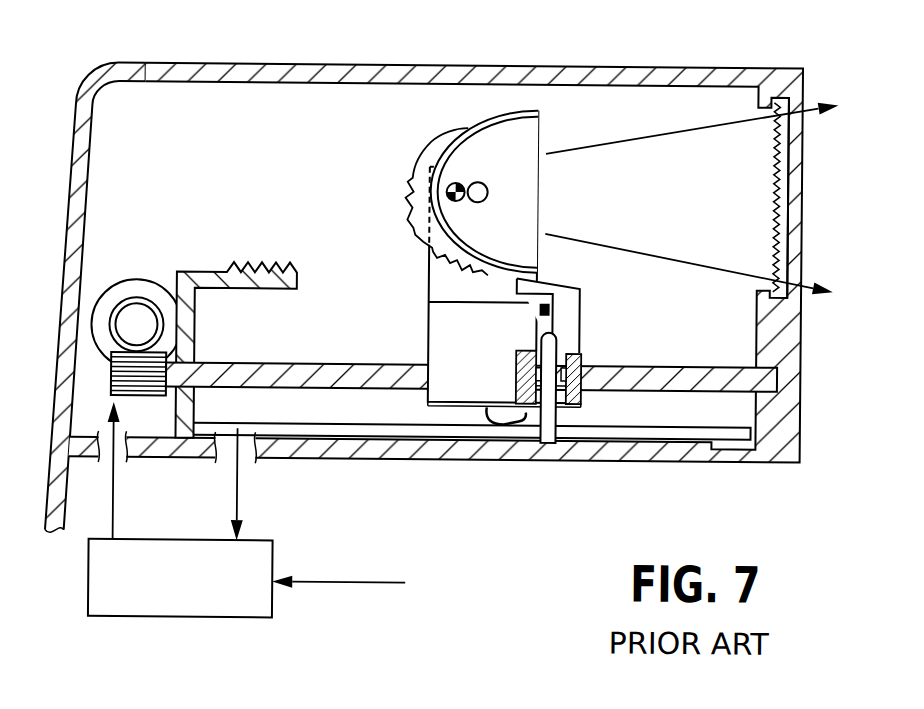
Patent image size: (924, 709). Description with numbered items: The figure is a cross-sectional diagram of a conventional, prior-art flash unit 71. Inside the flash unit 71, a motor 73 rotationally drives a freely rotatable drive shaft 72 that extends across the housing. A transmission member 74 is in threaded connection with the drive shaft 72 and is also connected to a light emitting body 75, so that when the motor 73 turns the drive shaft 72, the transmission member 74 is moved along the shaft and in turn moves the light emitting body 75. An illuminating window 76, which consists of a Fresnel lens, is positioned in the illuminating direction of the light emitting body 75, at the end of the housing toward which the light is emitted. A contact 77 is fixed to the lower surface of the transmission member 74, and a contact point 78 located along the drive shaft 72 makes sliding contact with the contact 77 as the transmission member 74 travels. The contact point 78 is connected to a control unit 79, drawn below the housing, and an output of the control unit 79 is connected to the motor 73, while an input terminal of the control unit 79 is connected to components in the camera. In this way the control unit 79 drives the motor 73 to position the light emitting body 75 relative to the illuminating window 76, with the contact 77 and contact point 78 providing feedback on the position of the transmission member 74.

The flash unit 71 is at (671, 65).
The drive shaft 72 is at (350, 366).
The motor 73 is at (137, 284).
The transmission member 74 is at (585, 306).
The light emitting body 75 is at (538, 184).
The illuminating window 76 is at (788, 186).
The contact 77 is at (507, 440).
The contact point 78 is at (318, 430).
The control unit 79 is at (276, 600).